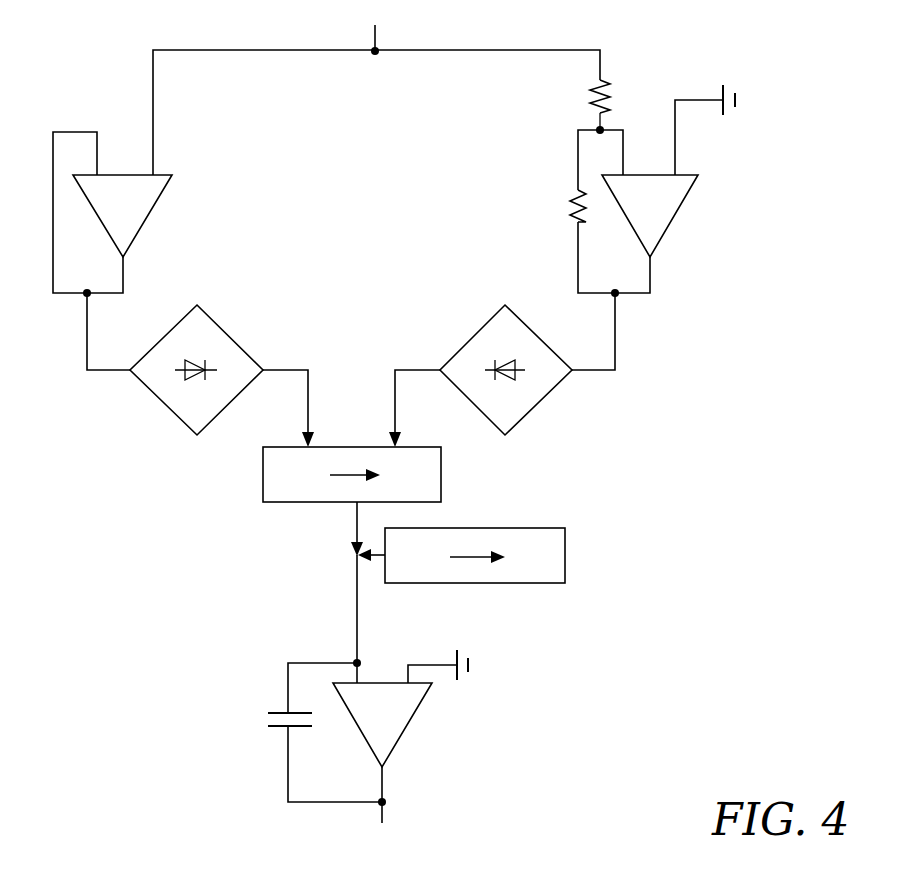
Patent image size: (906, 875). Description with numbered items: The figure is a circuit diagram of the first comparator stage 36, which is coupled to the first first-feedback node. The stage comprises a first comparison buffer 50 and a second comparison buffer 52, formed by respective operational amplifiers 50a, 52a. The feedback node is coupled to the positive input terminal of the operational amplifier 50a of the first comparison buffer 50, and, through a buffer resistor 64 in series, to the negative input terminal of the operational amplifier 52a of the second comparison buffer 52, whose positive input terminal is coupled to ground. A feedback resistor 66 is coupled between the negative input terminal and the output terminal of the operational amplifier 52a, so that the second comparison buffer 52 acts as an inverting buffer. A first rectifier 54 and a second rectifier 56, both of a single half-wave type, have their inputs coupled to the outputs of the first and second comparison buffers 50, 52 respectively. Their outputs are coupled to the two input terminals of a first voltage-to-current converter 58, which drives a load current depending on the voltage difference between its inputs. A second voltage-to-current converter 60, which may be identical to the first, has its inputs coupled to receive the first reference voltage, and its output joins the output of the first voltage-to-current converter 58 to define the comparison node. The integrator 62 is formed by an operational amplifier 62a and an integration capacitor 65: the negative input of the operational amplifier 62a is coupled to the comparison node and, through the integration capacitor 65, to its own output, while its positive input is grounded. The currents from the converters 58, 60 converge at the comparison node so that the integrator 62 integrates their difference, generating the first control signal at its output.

The first comparator stage 36 is at (168, 551).
The first comparison buffer 50 is at (161, 251).
The operational amplifier 50a is at (134, 225).
The second comparison buffer 52 is at (602, 227).
The operational amplifier 52a is at (662, 226).
The first rectifier 54 is at (232, 341).
The second rectifier 56 is at (462, 354).
The first voltage-to-current converter 58 is at (263, 470).
The second voltage-to-current converter 60 is at (530, 578).
The integrator 62 is at (357, 728).
The operational amplifier 62a is at (378, 700).
The buffer resistor 64 is at (612, 96).
The integration capacitor 65 is at (280, 712).
The feedback resistor 66 is at (568, 207).